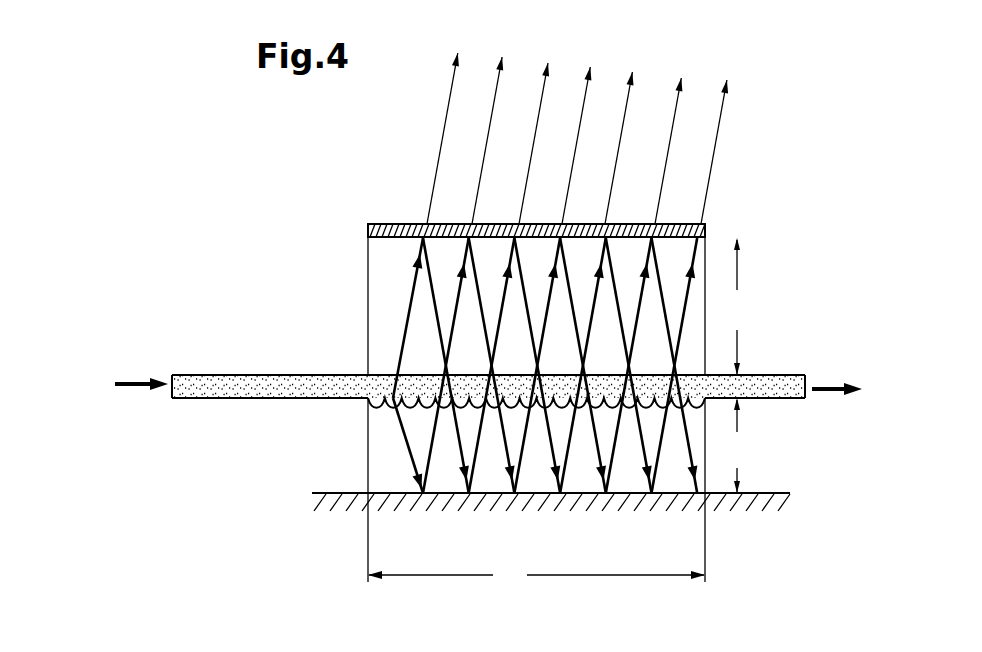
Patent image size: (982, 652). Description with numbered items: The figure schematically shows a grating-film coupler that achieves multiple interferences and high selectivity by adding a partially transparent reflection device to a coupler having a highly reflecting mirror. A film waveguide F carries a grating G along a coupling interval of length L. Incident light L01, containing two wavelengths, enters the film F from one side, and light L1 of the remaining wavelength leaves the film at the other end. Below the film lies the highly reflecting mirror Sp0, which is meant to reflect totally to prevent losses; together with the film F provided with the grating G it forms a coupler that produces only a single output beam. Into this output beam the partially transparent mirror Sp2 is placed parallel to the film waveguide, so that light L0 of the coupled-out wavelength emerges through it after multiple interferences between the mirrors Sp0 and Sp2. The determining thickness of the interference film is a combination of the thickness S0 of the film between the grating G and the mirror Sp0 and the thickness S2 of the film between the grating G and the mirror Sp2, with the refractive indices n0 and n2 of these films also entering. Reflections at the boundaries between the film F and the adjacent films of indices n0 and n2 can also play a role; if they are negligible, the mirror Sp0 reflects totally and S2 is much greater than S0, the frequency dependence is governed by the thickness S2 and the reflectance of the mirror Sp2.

The film waveguide F is at (215, 400).
The grating G is at (700, 404).
The partially transparent mirror Sp2 is at (385, 224).
The highly reflecting mirror Sp0 is at (766, 500).
The refractive index of the film between grating and partially reflecting mirror n2 is at (531, 306).
The refractive index of the film between grating and highly reflecting mirror n0 is at (531, 490).
The radiated light of wavelength λ0 L0 is at (742, 69).
The incident light with wavelengths λ0 and λ1 L01 is at (141, 381).
The transmitted light of wavelength λ1 L1 is at (831, 383).
The thickness of the film between the grating and the partially reflecting mirror S2 is at (741, 306).
The thickness of the film between the grating and the highly reflecting mirror S0 is at (742, 445).
The grating length L is at (536, 571).